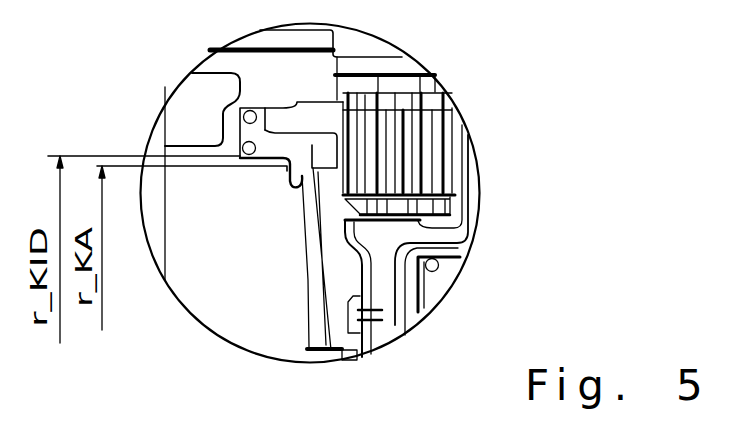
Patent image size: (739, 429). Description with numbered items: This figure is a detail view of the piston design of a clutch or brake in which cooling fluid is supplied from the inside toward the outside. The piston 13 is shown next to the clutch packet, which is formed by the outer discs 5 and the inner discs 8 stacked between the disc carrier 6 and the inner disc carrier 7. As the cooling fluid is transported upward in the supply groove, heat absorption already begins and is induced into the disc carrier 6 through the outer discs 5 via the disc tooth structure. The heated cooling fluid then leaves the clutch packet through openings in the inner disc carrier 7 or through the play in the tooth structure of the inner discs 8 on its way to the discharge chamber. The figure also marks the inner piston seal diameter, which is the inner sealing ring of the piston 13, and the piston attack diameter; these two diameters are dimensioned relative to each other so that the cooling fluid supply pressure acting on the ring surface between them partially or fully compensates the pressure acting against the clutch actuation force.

The piston 13 is at (240, 130).
The disc carrier 6 is at (390, 90).
The inner discs 8 is at (432, 127).
The outer discs 5 is at (440, 145).
The inner disc carrier 7 is at (370, 287).